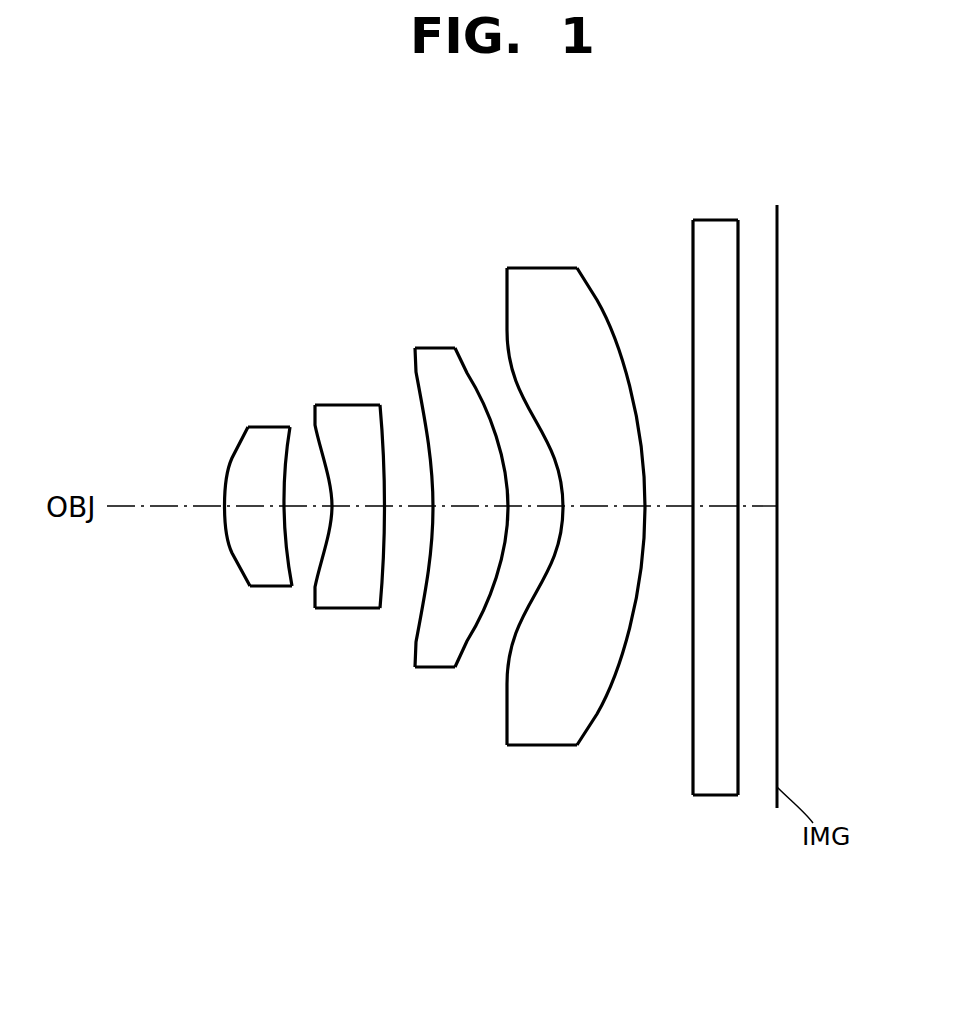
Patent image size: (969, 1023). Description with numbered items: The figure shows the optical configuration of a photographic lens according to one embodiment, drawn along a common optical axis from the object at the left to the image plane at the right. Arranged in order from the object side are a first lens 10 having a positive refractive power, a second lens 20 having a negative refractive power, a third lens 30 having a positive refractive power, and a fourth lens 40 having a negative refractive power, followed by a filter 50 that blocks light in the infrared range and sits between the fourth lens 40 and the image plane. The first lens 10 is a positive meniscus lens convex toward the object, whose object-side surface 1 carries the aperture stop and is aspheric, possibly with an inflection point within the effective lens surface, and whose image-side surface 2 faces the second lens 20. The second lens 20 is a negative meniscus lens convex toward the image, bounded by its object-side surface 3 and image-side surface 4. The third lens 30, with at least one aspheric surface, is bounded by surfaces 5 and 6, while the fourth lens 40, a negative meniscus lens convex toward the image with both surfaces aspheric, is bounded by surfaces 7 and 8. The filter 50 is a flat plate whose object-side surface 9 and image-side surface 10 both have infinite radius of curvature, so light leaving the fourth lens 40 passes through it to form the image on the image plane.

The first surface 1 is at (240, 440).
The second surface 2 is at (296, 442).
The third surface 3 is at (313, 427).
The fourth surface 4 is at (383, 432).
The fifth surface 5 is at (410, 378).
The sixth surface 6 is at (466, 372).
The seventh surface 7 is at (505, 312).
The eighth surface 8 is at (597, 295).
The ninth surface 9 is at (694, 253).
The first lens 10 is at (488, 408).
The second lens 20 is at (348, 511).
The third lens 30 is at (450, 511).
The fourth lens 40 is at (560, 507).
The filter 50 is at (700, 512).